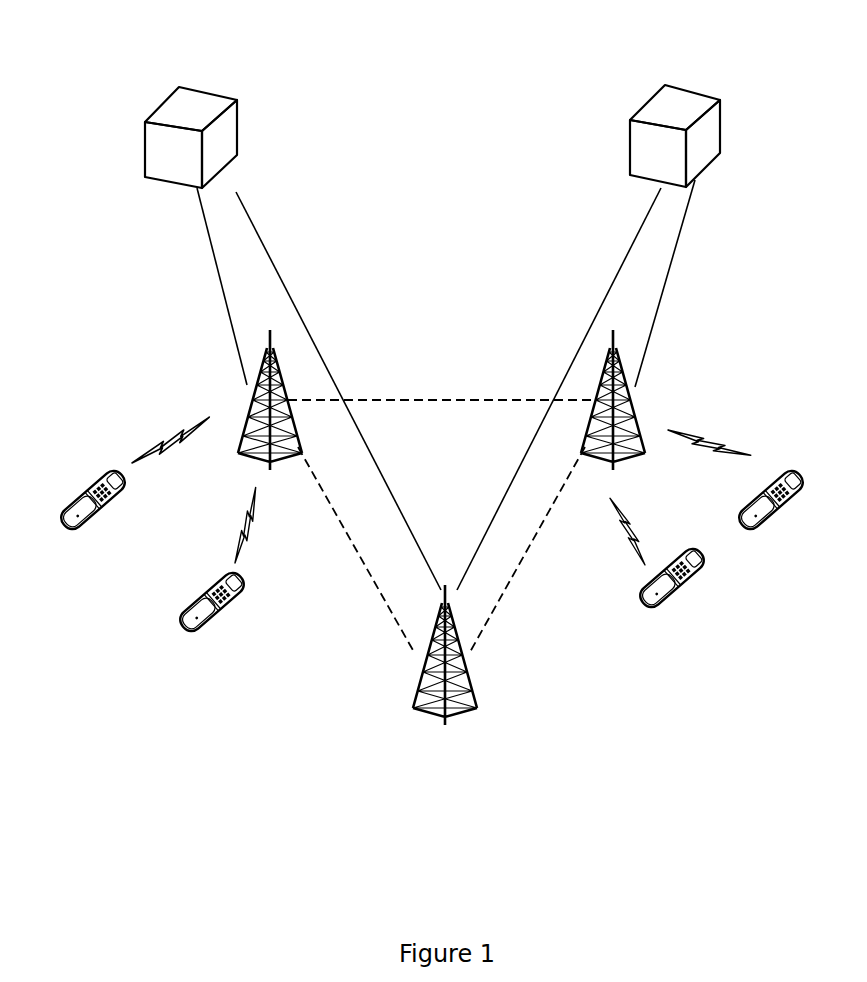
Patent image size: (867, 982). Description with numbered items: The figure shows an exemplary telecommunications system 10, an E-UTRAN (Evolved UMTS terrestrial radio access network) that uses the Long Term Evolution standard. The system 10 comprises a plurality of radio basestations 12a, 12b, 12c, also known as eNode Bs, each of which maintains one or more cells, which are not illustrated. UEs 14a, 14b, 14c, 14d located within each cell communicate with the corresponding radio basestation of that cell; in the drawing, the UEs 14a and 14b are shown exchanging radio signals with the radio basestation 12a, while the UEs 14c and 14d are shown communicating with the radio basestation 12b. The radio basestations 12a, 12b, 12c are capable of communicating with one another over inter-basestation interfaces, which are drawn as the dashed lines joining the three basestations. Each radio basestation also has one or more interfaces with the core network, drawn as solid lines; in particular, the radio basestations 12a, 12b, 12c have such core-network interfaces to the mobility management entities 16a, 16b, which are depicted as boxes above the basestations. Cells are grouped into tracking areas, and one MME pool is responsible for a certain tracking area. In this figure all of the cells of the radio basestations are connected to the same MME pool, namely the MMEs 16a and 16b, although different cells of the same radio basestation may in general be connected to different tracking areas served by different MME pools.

The telecommunications system 10 is at (78, 100).
The radio basestation 12a is at (247, 417).
The radio basestation 12b is at (632, 417).
The radio basestation 12c is at (467, 680).
The UE 14a is at (72, 510).
The UE 14b is at (212, 623).
The UE 14c is at (670, 602).
The UE 14d is at (767, 530).
The mobility management entity 16a is at (206, 92).
The mobility management entity 16b is at (695, 92).